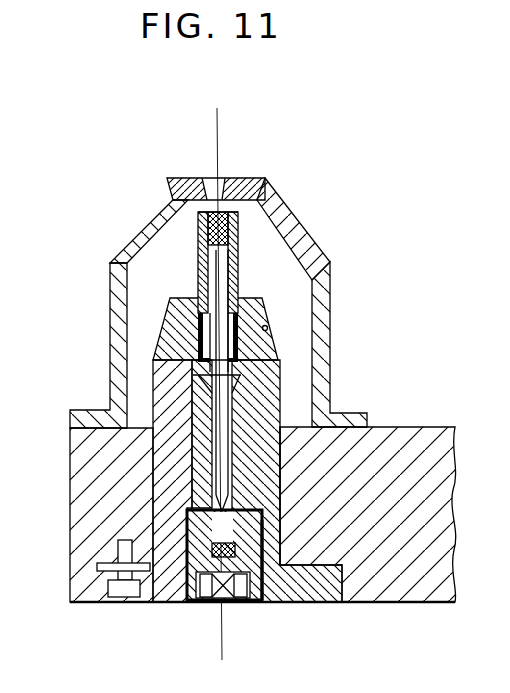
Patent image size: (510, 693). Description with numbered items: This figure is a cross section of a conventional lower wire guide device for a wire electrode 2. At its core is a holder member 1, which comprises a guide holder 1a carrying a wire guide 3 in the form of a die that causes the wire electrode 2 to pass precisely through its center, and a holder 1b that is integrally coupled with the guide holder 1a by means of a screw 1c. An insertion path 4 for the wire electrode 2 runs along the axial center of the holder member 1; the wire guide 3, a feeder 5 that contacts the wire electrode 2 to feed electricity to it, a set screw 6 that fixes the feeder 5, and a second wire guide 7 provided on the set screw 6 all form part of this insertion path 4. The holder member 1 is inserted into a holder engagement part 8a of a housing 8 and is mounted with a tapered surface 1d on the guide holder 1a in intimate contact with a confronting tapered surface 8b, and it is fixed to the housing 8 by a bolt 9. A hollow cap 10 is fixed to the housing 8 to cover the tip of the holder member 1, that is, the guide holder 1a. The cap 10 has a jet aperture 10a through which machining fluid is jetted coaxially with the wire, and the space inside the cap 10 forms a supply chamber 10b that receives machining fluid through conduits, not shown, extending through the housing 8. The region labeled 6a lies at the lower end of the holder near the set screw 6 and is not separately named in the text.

The holder member 1 is at (282, 406).
The guide holder 1a is at (240, 253).
The holder 1b is at (257, 481).
The screw 1c is at (195, 322).
The tapered surface 1d is at (280, 350).
The wire electrode 2 is at (244, 384).
The wire guide 3 is at (257, 192).
The insertion path 4 is at (118, 392).
The feeder 5 is at (204, 452).
The set screw 6 is at (193, 600).
The fitting wall 6a is at (273, 536).
The second wire guide 7 is at (270, 594).
The housing 8 is at (422, 592).
The holder engagement part 8a is at (275, 508).
The confronting tapered surface 8b is at (268, 328).
The bolt 9 is at (122, 593).
The hollow cap 10 is at (315, 246).
The jet aperture 10a is at (213, 185).
The supply chamber 10b is at (143, 239).